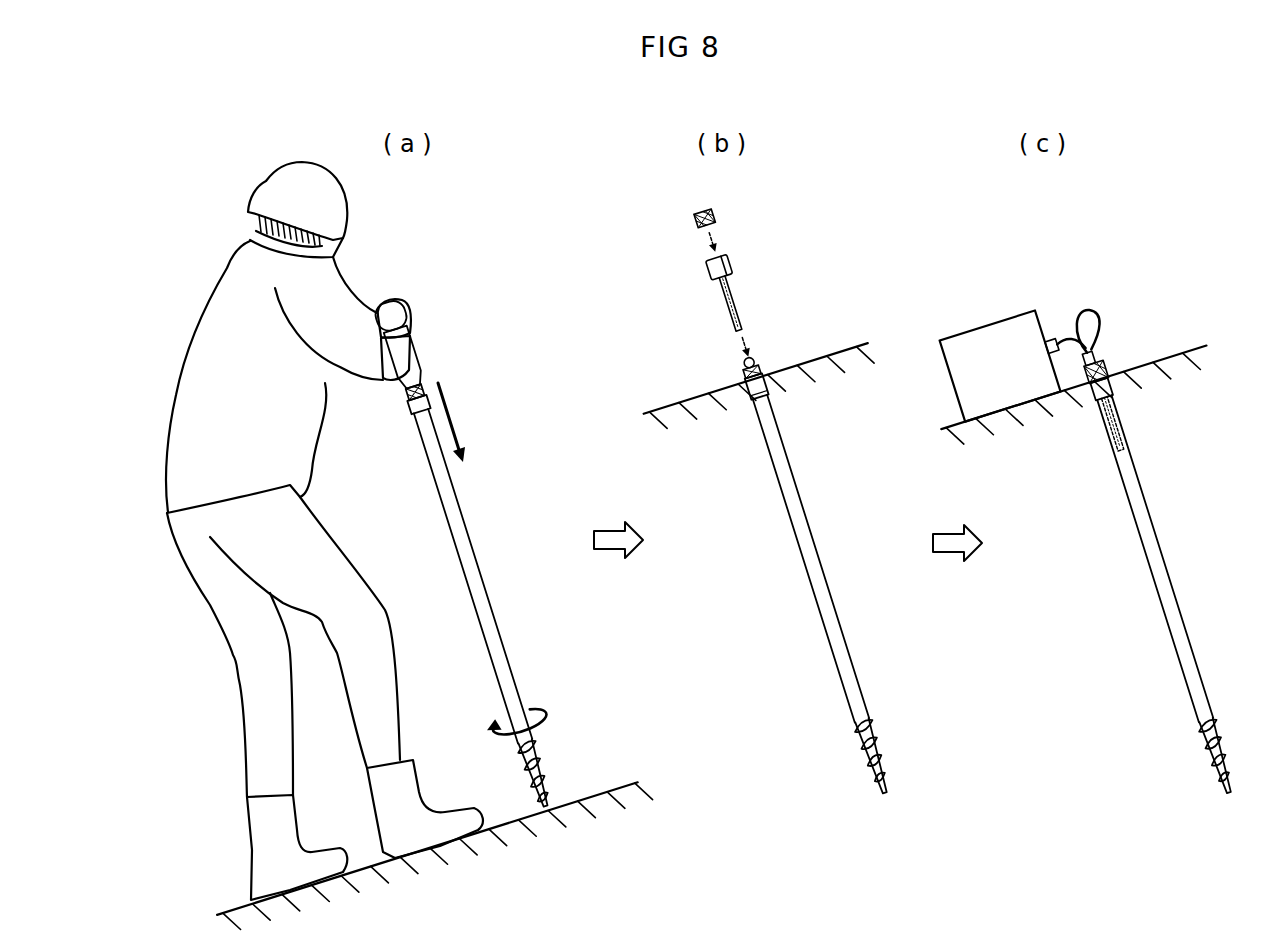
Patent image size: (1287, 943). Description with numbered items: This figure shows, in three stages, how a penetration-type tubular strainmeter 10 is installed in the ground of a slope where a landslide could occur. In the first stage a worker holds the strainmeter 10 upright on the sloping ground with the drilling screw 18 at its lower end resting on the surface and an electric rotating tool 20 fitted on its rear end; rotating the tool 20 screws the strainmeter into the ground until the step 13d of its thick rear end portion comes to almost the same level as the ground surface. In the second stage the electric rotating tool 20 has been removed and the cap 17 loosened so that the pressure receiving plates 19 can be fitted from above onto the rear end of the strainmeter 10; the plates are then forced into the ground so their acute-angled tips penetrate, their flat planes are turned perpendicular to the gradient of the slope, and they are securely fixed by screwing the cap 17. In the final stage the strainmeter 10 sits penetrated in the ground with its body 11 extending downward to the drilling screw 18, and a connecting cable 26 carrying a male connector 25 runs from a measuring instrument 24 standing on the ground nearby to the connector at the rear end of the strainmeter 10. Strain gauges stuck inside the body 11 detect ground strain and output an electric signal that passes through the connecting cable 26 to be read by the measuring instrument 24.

The tubular strainmeter 10 is at (482, 530).
The body 11 is at (1160, 552).
The step 13d is at (744, 372).
The cap 17 is at (697, 217).
The drilling screw 18 is at (546, 760).
The pressure receiving plates 19 is at (715, 292).
The electric rotating tool 20 is at (422, 360).
The measuring instrument 24 is at (985, 326).
The male connector 25 is at (1104, 358).
The connecting cable 26 is at (1090, 308).